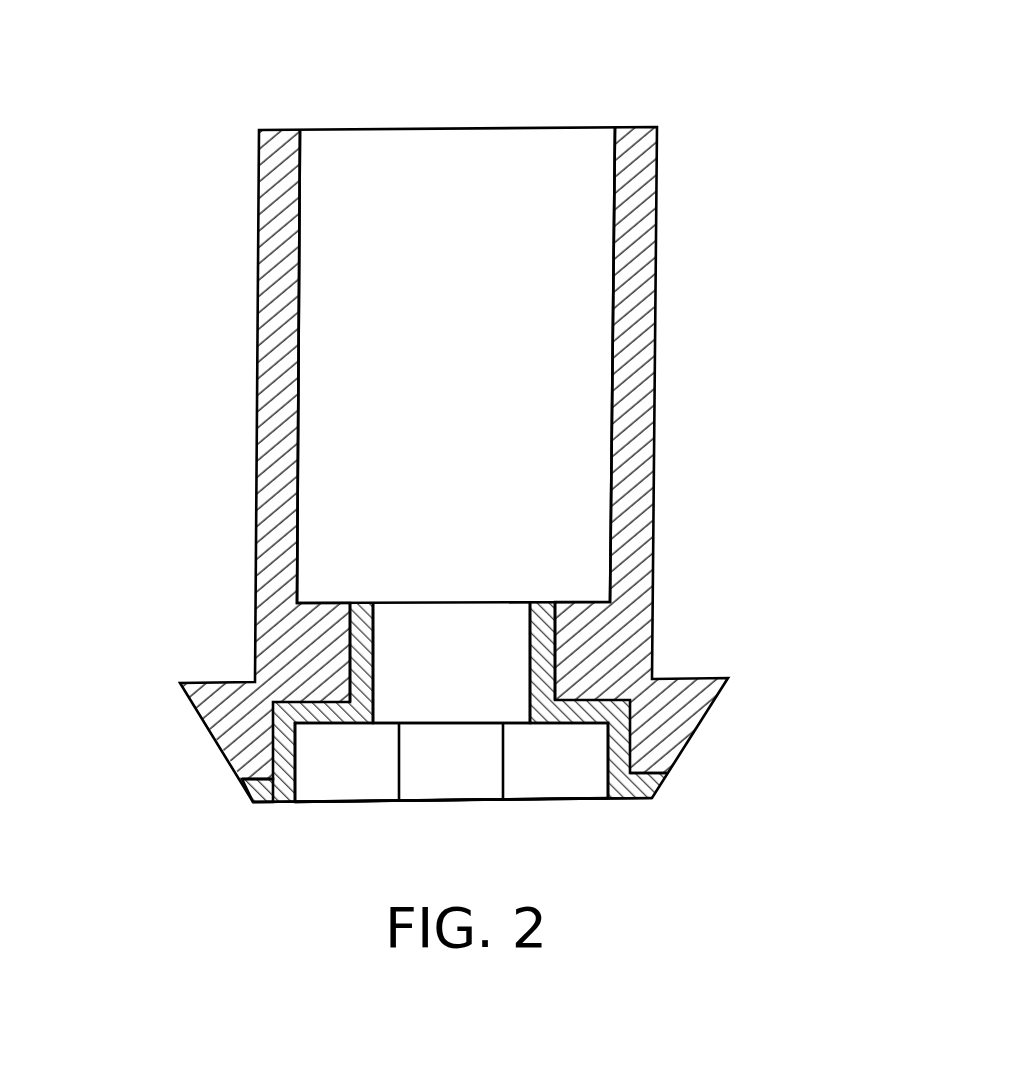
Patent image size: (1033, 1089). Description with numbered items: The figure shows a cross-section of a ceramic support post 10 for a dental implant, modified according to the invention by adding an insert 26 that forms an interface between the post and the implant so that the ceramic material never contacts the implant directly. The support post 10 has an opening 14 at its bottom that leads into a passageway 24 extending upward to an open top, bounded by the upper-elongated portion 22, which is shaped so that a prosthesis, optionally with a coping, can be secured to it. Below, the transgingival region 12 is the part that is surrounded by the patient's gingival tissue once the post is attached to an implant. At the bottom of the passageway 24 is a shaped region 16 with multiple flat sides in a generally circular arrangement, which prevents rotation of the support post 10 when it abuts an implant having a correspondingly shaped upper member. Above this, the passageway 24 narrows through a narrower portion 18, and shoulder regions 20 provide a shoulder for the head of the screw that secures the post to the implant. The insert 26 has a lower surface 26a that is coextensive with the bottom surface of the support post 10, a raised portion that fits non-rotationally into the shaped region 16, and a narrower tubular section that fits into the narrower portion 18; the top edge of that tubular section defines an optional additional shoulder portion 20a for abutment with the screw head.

The support post 10 is at (682, 55).
The transgingival region 12 is at (692, 743).
The opening 14 is at (308, 820).
The shaped region 16 is at (567, 767).
The narrower portion 18 is at (467, 582).
The shoulder regions 20 is at (323, 605).
The additional shoulder portion 20a is at (363, 605).
The upper-elongated portion 22 is at (655, 345).
The passageway 24 is at (422, 193).
The insert 26 is at (245, 793).
The lower surface 26a is at (275, 805).